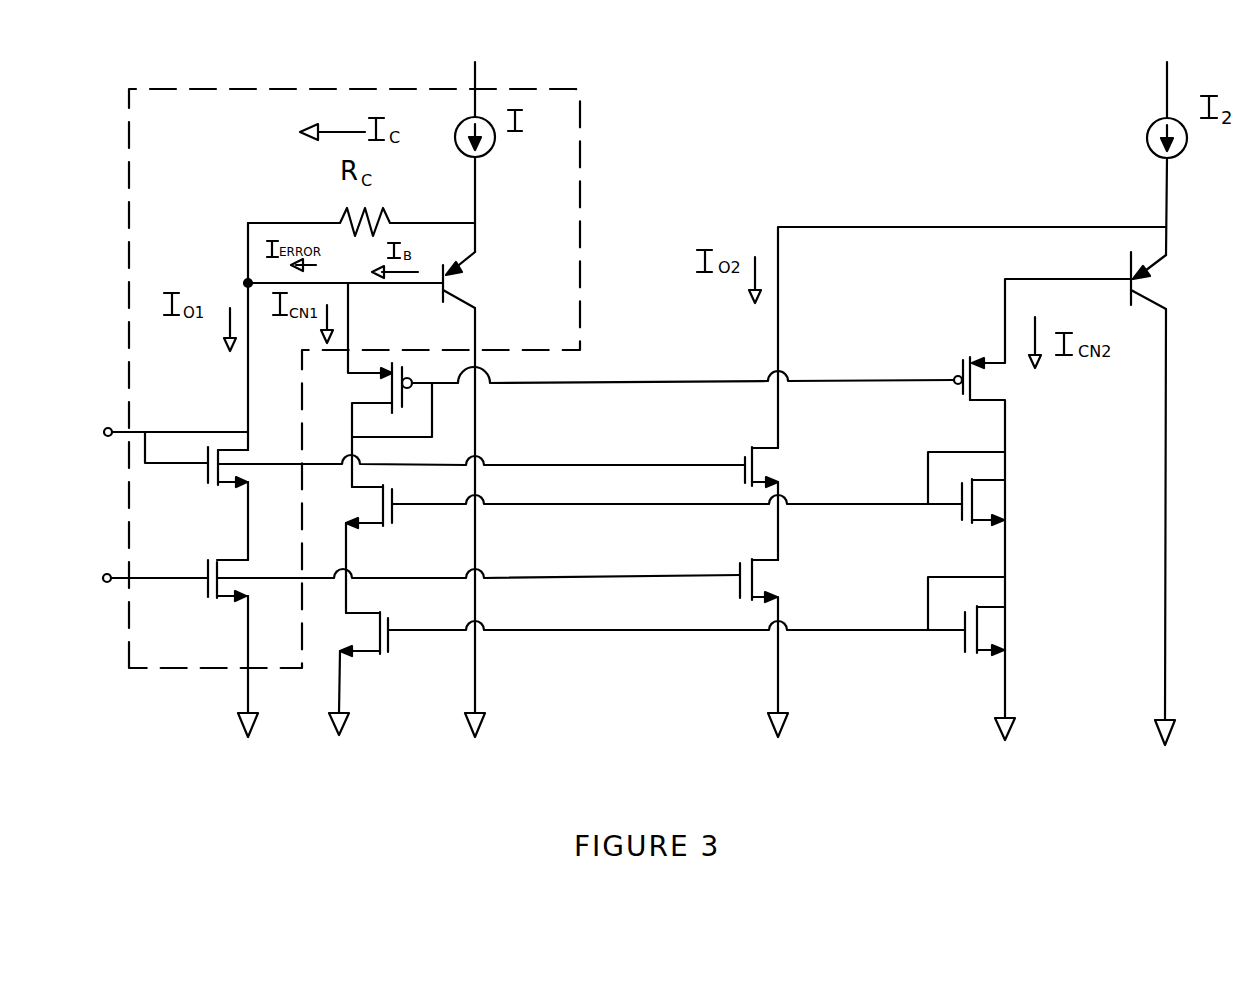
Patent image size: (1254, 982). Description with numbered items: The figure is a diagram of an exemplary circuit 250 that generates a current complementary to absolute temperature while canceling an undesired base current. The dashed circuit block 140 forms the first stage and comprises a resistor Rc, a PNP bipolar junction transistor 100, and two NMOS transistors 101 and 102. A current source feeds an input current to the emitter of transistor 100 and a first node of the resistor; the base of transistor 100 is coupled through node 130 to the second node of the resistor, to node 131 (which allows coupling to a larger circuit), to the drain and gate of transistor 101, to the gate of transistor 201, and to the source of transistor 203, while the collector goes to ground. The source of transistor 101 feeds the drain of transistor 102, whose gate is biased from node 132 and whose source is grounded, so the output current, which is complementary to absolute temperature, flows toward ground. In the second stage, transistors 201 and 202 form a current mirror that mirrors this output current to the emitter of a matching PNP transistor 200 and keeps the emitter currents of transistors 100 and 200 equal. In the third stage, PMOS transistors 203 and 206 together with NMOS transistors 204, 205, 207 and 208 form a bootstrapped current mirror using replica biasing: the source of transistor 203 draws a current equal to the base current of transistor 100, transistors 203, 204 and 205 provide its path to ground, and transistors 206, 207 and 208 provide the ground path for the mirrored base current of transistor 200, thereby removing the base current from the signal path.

The PNP bipolar junction transistor 100 is at (487, 246).
The NMOS transistor 101 is at (248, 461).
The NMOS transistor 102 is at (246, 572).
The node 130 is at (246, 284).
The node 131 is at (105, 437).
The node 132 is at (104, 583).
The circuit block 140 is at (210, 129).
The PNP bipolar junction transistor 200 is at (1181, 280).
The NMOS transistor 201 is at (740, 455).
The NMOS transistor 202 is at (739, 570).
The PMOS transistor 203 is at (401, 423).
The NMOS transistor 204 is at (378, 549).
The NMOS transistor 205 is at (367, 673).
The PMOS transistor 206 is at (978, 421).
The NMOS transistor 207 is at (995, 488).
The NMOS transistor 208 is at (994, 616).
The circuit 250 is at (534, 86).